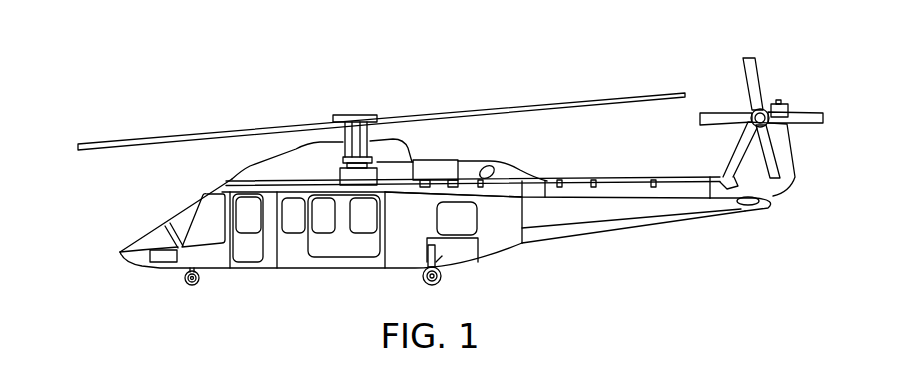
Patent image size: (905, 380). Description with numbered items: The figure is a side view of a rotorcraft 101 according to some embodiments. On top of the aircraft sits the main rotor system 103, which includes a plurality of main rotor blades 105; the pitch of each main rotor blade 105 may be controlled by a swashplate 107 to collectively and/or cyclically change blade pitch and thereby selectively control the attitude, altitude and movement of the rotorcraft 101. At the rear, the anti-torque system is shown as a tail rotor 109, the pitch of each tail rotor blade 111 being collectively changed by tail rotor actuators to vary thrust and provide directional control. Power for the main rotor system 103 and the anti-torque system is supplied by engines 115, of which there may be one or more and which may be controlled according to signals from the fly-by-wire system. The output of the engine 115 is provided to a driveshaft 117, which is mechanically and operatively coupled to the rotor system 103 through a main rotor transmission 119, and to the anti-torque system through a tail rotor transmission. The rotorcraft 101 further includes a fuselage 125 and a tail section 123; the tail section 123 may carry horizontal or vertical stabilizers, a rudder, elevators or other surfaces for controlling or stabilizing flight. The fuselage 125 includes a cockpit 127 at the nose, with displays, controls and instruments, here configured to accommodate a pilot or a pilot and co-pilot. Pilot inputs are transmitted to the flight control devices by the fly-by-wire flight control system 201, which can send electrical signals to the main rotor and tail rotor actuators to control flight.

The rotorcraft 101 is at (258, 66).
The main rotor system 103 is at (381, 105).
The main rotor blade 105 is at (208, 133).
The swashplate 107 is at (342, 158).
The tail rotor 109 is at (768, 107).
The tail rotor blade 111 is at (807, 124).
The engine 115 is at (437, 164).
The driveshaft 117 is at (393, 193).
The main rotor transmission 119 is at (347, 182).
The tail section 123 is at (644, 228).
The fuselage 125 is at (295, 268).
The cockpit 127 is at (178, 216).
The fly-by-wire (FBW) flight control system 201 is at (165, 263).